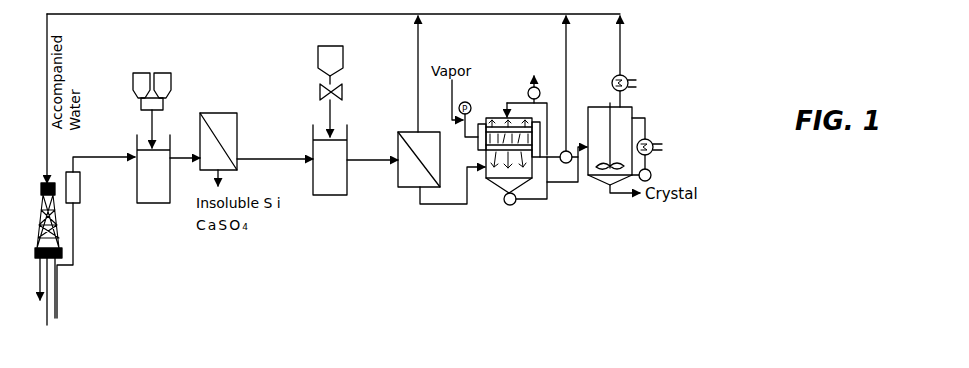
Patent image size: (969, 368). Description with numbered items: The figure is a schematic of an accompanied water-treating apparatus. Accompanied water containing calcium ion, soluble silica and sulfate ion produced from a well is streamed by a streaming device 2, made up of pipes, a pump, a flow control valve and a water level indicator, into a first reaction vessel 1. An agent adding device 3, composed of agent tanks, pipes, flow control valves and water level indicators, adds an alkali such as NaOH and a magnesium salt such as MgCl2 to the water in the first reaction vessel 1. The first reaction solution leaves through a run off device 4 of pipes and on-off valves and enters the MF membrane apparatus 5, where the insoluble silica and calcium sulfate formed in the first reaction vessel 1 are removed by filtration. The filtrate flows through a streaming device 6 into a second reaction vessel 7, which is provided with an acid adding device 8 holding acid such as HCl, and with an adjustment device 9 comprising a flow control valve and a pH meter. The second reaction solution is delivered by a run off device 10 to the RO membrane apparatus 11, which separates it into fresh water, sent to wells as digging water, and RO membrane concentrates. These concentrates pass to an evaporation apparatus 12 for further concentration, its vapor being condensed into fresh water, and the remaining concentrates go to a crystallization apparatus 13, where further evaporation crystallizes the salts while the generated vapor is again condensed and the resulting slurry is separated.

The first reaction vessel 1 is at (170, 142).
The streaming device 2 is at (80, 185).
The agent adding device 3 is at (138, 72).
The run off device 4 is at (180, 160).
The MF membrane apparatus 5 is at (225, 113).
The streaming device 6 is at (254, 158).
The second reaction vessel 7 is at (348, 136).
The acid adding device 8 is at (333, 47).
The adjustment device 9 is at (343, 99).
The run off device 10 is at (370, 162).
The RO membrane apparatus 11 is at (425, 132).
The evaporation apparatus 12 is at (500, 118).
The crystallization apparatus 13 is at (625, 106).